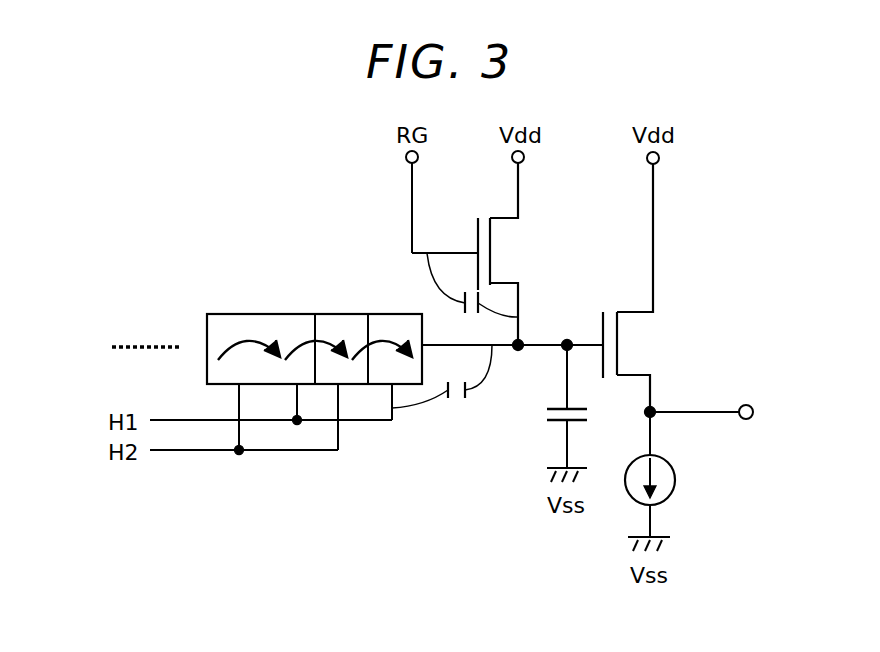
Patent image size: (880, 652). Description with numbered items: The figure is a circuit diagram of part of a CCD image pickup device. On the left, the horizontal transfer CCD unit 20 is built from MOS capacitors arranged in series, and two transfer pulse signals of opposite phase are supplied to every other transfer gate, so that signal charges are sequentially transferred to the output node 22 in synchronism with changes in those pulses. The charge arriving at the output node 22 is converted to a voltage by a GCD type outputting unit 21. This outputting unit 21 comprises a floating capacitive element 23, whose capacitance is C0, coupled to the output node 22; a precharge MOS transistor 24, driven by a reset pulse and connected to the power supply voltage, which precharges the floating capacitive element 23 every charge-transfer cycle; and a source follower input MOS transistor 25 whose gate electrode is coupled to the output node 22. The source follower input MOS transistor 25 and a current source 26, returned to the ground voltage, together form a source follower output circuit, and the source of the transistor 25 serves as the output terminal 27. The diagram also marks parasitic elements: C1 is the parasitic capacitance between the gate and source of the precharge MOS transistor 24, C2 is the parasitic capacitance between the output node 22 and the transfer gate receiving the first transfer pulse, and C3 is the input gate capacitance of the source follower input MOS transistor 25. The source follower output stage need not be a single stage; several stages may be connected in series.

The horizontal transfer CCD unit 20 is at (184, 306).
The outputting unit 21 is at (686, 262).
The output node 22 is at (522, 341).
The floating capacitive element 23 is at (563, 407).
The precharge MOS transistor 24 is at (515, 252).
The source follower input MOS transistor 25 is at (647, 343).
The current source 26 is at (675, 473).
The output terminal 27 is at (750, 405).
The capacitance of the floating capacitive element C0 is at (559, 445).
The parasitic capacitance between gate and source of the precharge MOS transistor C1 is at (457, 285).
The parasitic capacitance between output node and transfer gate C2 is at (442, 389).
The input gate capacitance of the source follower input MOS transistor C3 is at (610, 310).